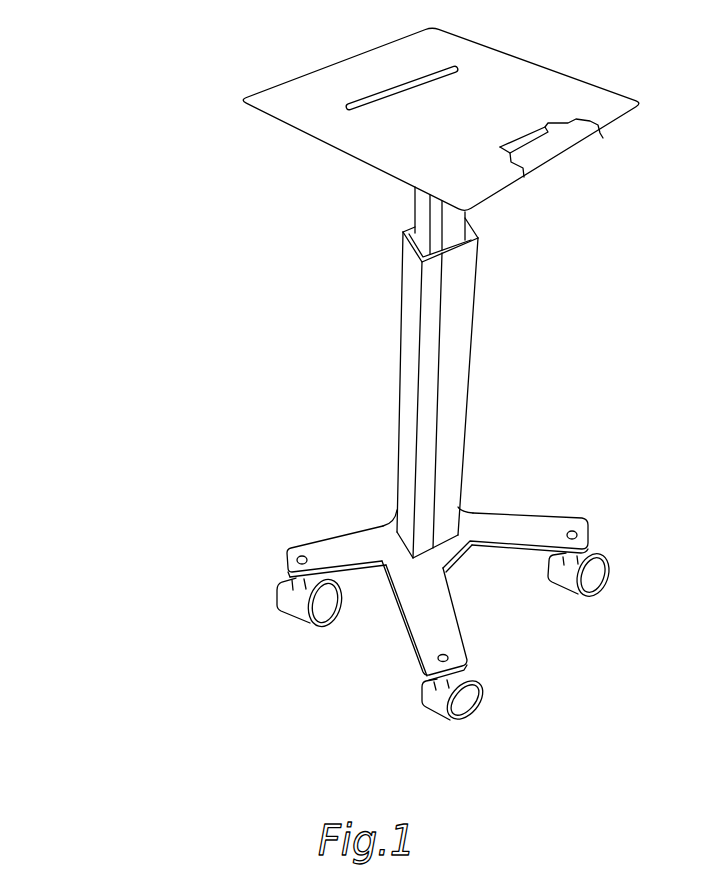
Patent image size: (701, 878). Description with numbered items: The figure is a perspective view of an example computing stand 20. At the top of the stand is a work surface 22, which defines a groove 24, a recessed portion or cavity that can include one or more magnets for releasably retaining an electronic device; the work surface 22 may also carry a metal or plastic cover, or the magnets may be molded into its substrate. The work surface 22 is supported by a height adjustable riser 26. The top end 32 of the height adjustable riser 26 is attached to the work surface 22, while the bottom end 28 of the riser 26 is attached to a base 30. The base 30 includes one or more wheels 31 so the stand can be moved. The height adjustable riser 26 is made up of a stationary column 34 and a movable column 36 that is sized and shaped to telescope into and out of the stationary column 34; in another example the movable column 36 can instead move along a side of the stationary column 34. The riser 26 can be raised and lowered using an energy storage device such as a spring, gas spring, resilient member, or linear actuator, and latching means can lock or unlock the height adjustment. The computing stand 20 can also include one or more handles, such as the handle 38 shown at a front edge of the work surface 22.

The computing stand 20 is at (342, 376).
The work surface 22 is at (532, 78).
The groove 24 is at (402, 85).
The height adjustable riser 26 is at (470, 372).
The bottom end 28 is at (417, 571).
The base 30 is at (332, 553).
The wheels 31 is at (322, 613).
The top end 32 is at (413, 198).
The stationary column 34 is at (474, 395).
The movable column 36 is at (467, 218).
The handle 38 is at (560, 152).